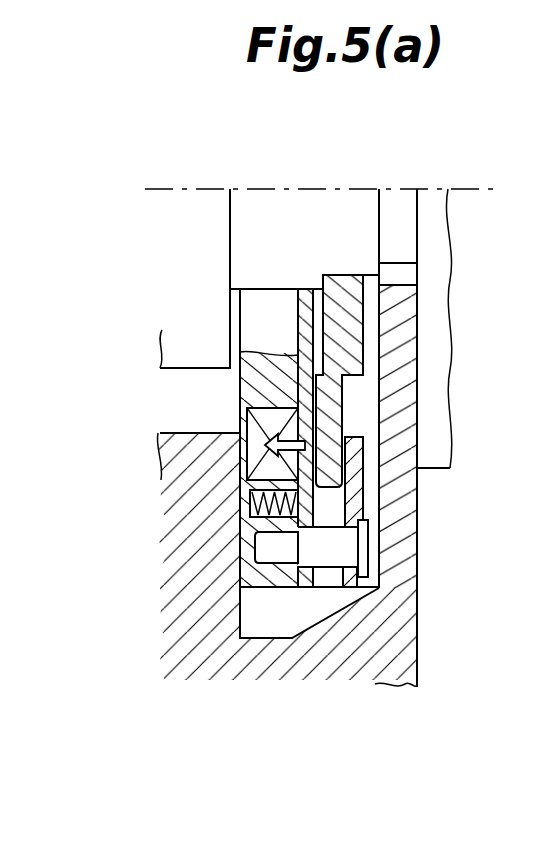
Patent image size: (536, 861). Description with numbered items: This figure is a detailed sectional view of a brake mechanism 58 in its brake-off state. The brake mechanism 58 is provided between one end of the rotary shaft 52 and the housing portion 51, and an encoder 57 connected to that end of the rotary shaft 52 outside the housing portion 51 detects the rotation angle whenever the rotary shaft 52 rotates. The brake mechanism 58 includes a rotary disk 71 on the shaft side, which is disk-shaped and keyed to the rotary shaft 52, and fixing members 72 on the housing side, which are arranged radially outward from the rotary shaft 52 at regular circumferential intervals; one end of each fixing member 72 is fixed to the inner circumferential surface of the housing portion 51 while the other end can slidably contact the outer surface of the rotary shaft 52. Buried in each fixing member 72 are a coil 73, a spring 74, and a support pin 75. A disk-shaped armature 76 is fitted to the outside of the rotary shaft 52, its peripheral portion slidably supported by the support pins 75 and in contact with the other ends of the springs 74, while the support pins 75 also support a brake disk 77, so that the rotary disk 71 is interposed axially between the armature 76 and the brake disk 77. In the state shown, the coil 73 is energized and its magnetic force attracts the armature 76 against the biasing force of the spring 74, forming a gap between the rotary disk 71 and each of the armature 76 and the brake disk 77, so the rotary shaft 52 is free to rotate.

The housing portion 51 is at (200, 424).
The rotary shaft 52 is at (316, 200).
The encoder 57 is at (436, 200).
The brake mechanism 58 is at (172, 688).
The rotary disk 71 is at (352, 336).
The fixing member 72 is at (240, 393).
The coil 73 is at (258, 463).
The spring 74 is at (250, 504).
The support pin 75 is at (258, 552).
The armature 76 is at (302, 587).
The brake disk 77 is at (349, 577).